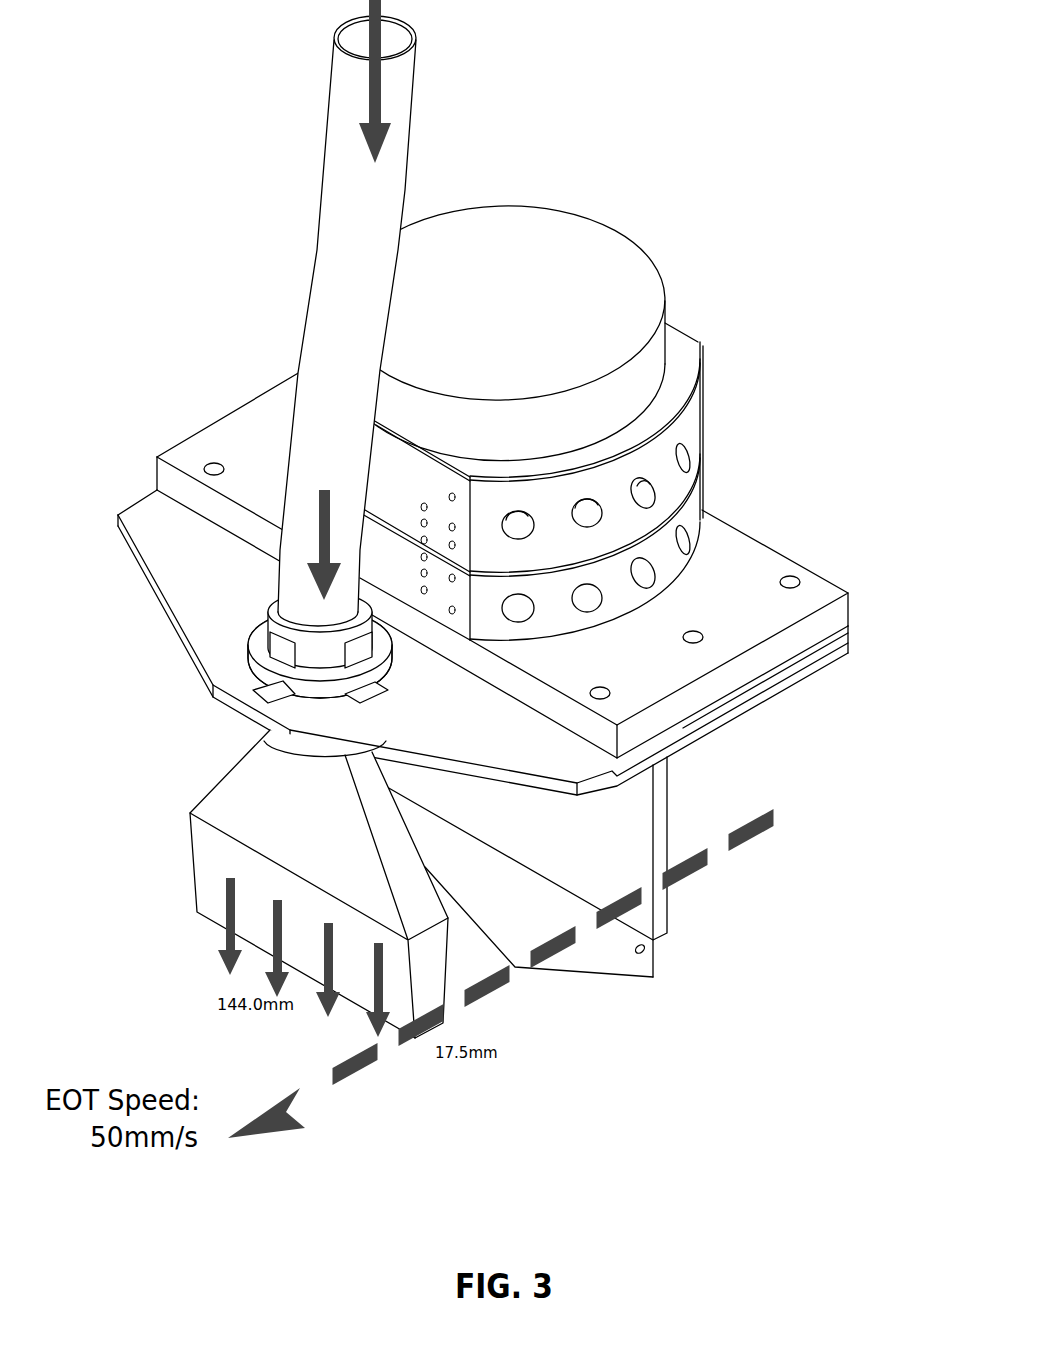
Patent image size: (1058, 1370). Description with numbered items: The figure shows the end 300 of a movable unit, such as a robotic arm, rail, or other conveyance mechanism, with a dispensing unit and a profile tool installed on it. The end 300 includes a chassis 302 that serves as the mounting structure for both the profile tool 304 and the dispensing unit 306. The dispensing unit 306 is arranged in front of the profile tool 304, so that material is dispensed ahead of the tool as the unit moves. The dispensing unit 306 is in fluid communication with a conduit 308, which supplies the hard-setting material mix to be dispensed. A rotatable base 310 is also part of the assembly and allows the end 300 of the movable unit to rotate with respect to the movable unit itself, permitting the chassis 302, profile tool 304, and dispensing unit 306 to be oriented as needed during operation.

The end of movable unit 300 is at (834, 483).
The chassis 302 is at (694, 895).
The profile tool 304 is at (633, 988).
The dispensing unit 306 is at (158, 788).
The conduit 308 is at (434, 77).
The rotatable base 310 is at (724, 375).